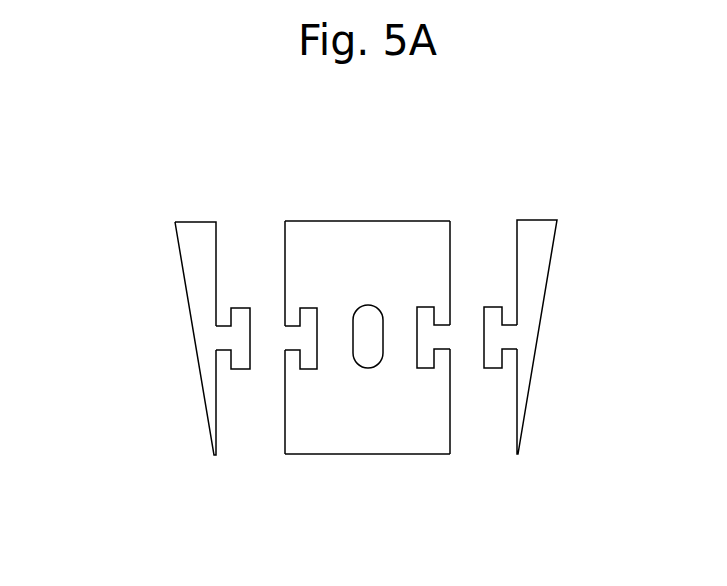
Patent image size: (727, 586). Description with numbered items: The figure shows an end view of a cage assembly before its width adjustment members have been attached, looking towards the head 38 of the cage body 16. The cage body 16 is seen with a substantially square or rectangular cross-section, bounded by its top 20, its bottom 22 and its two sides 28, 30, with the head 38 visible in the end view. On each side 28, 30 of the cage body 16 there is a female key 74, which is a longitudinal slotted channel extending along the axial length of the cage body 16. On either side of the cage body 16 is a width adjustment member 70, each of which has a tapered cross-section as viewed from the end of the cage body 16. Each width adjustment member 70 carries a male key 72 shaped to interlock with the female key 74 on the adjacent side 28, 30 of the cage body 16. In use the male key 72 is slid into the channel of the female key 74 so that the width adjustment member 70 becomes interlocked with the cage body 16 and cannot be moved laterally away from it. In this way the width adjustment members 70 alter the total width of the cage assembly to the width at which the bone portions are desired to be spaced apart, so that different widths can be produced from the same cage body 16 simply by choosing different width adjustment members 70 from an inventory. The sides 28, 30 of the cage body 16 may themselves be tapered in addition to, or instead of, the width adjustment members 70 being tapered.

The cage body 16 is at (330, 197).
The top 20 is at (367, 248).
The bottom 22 is at (332, 456).
The side 28 is at (450, 243).
The side 30 is at (285, 425).
The head 38 is at (373, 352).
The width adjustment member 70 is at (188, 308).
The male key 72 is at (232, 317).
The female key 74 is at (298, 313).